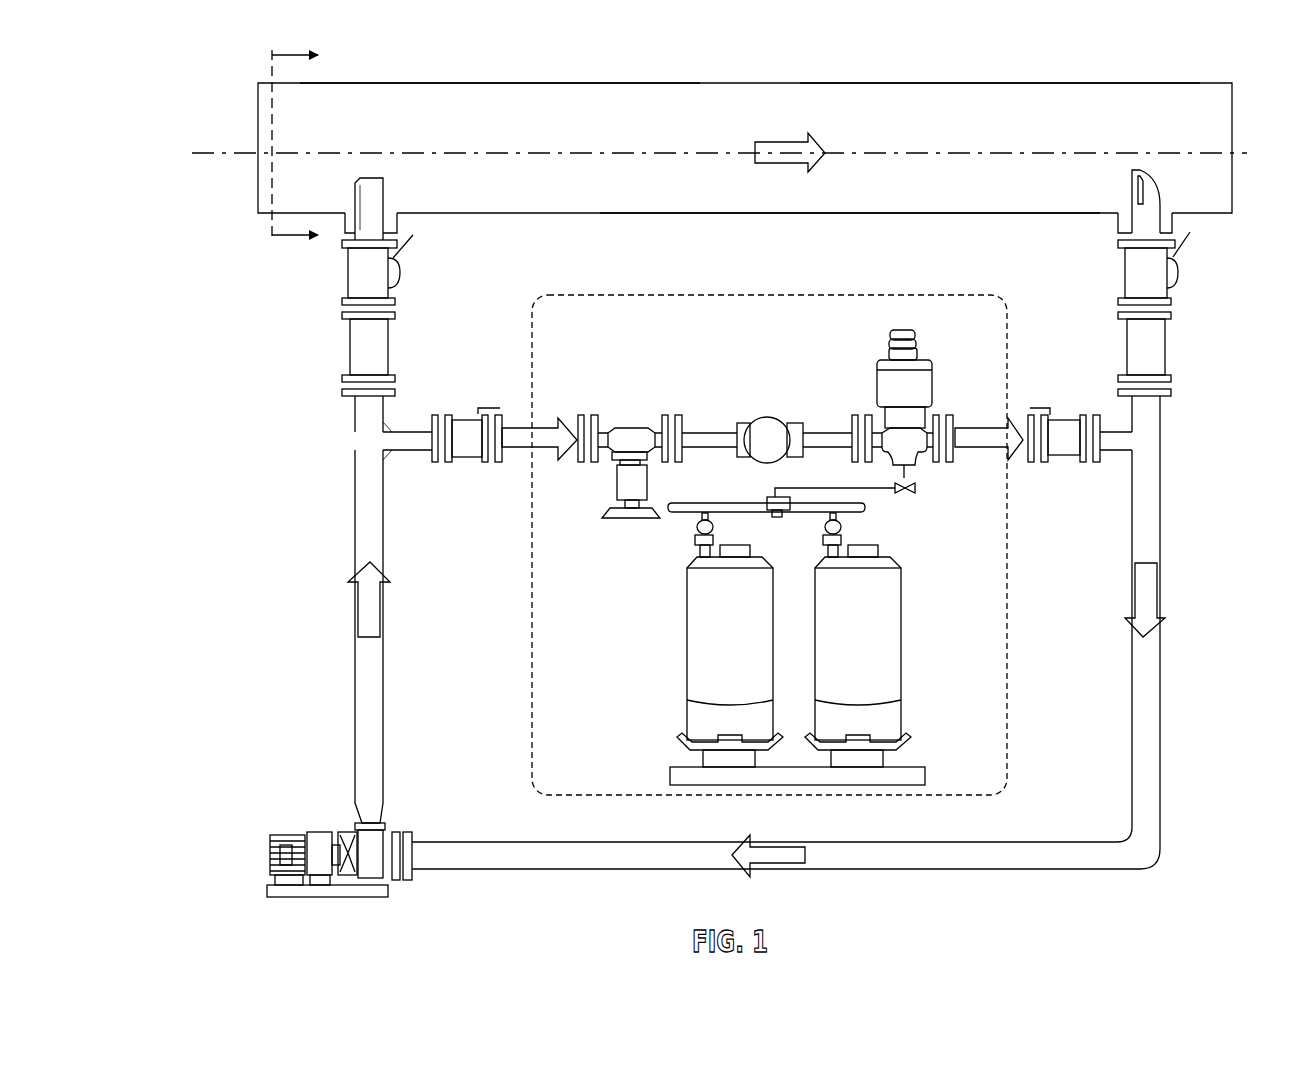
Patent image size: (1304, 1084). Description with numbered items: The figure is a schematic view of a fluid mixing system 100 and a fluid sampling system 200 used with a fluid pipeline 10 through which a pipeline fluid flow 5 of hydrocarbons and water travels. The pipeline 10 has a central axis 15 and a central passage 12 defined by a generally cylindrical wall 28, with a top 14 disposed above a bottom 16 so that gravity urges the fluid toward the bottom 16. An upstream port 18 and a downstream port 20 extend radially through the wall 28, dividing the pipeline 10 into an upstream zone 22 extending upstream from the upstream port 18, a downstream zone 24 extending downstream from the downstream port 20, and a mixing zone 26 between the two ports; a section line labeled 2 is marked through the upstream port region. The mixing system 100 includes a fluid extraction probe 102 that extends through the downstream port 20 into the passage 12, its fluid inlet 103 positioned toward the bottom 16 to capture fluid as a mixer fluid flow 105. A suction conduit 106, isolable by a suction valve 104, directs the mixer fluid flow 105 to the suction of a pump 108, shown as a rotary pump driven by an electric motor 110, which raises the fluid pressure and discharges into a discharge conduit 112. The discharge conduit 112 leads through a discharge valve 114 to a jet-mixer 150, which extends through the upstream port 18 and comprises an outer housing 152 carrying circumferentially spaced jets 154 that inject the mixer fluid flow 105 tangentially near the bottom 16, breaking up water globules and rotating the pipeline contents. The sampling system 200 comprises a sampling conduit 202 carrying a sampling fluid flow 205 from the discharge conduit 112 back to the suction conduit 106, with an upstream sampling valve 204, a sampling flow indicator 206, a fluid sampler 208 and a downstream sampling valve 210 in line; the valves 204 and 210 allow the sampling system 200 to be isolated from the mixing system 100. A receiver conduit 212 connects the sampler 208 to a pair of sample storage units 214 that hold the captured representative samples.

The section line 2- 2 is at (304, 146).
The pipeline fluid flow 5 is at (790, 137).
The fluid pipeline 10 is at (662, 78).
The central passage 12 is at (549, 199).
The top 14 is at (965, 83).
The central axis 15 is at (213, 152).
The bottom 16 is at (793, 213).
The upstream port 18 is at (398, 222).
The downstream port 20 is at (1172, 227).
The upstream zone 22 is at (150, 90).
The downstream zone 24 is at (1222, 80).
The mixing zone 26 is at (662, 233).
The cylindrical wall 28 is at (445, 83).
The fluid mixing system 100 is at (208, 278).
The fluid extraction probe 102 is at (1147, 212).
The fluid inlet 103 is at (1130, 196).
The suction valve 104 is at (1173, 275).
The mixer fluid flow 105 is at (358, 606).
The suction conduit 106 is at (1160, 506).
The pump 108 is at (385, 842).
The electric motor 110 is at (286, 834).
The discharge conduit 112 is at (356, 690).
The discharge valve 114 is at (356, 280).
The jet-mixer 150 is at (388, 200).
The outer housing 152 is at (365, 215).
The jets 154 is at (368, 188).
The fluid sampling system 200 is at (791, 337).
The sampling conduit 202 is at (414, 436).
The upstream sampling valve 204 is at (470, 465).
The sampling fluid flow 205 is at (545, 436).
The sampling flow indicator 206 is at (766, 425).
The fluid sampler 208 is at (892, 382).
The downstream sampling valve 210 is at (1065, 436).
The receiver conduit 212 is at (890, 490).
The sample storage units 214 is at (751, 666).